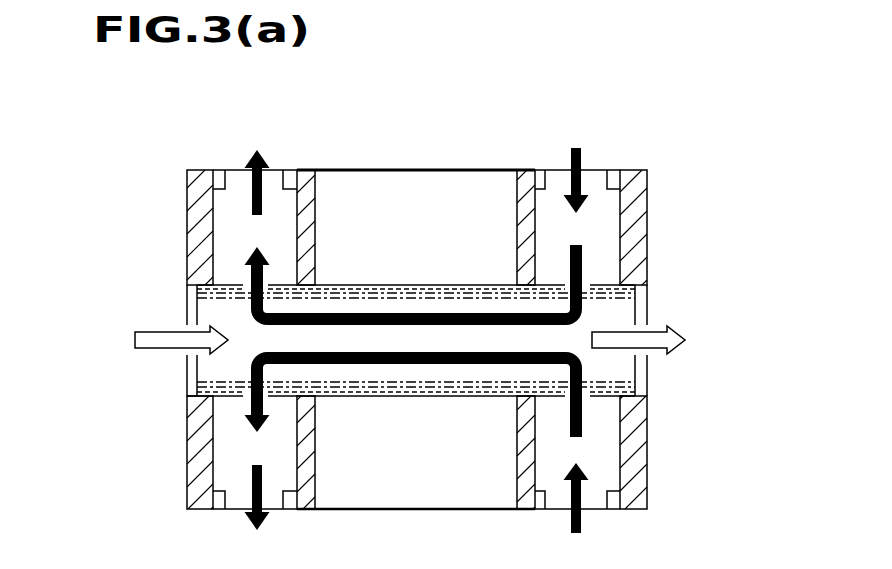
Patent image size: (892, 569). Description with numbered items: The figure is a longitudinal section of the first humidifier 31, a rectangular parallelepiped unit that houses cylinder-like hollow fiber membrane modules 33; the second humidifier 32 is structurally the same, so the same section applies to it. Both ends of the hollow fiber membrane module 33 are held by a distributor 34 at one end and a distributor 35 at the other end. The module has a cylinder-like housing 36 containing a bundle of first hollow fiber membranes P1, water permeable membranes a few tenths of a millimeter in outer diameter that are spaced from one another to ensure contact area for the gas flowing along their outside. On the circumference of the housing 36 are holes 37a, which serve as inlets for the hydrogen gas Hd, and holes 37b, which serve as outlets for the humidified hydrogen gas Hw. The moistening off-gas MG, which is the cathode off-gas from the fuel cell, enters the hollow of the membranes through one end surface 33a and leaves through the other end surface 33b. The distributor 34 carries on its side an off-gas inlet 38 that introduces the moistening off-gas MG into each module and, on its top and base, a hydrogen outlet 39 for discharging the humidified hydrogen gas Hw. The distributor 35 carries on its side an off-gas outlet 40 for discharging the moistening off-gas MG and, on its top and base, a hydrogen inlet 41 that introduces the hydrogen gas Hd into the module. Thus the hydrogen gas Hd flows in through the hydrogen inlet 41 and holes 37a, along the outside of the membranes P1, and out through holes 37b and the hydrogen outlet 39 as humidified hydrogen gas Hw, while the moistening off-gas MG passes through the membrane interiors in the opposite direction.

The first humidifier 31 is at (440, 340).
The second humidifier 32 is at (440, 340).
The hollow fiber membrane module 33 is at (420, 283).
The one end surface 33a is at (188, 365).
The another end surface 33b is at (642, 365).
The distributor 34 is at (188, 237).
The distributor 35 is at (648, 238).
The housing 36 is at (413, 397).
The holes 37a is at (567, 283).
The holes 37b is at (268, 283).
The off-gas inlet 38 is at (192, 313).
The hydrogen outlet 39 is at (233, 178).
The off-gas outlet 40 is at (642, 313).
The hydrogen inlet 41 is at (600, 175).
The humidified hydrogen gas Hw is at (408, 220).
The hydrogen gas Hd is at (417, 327).
The moistening off-gas MG is at (411, 340).
The first hollow fiber membranes P1 is at (187, 392).